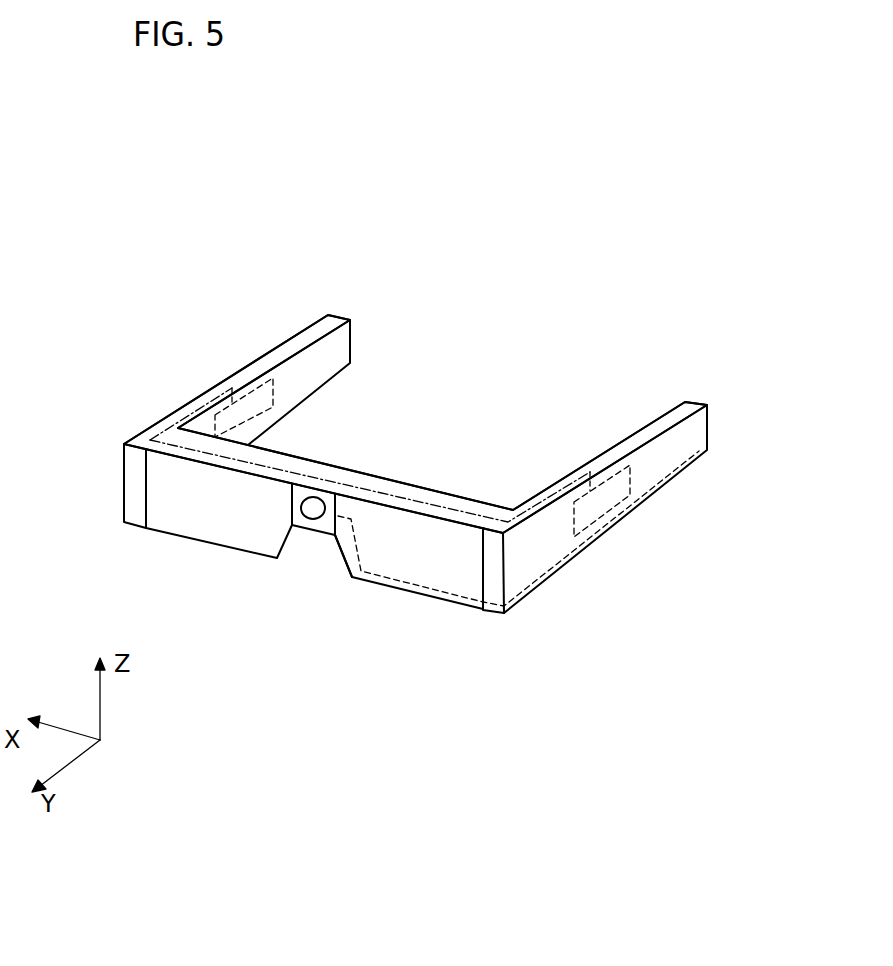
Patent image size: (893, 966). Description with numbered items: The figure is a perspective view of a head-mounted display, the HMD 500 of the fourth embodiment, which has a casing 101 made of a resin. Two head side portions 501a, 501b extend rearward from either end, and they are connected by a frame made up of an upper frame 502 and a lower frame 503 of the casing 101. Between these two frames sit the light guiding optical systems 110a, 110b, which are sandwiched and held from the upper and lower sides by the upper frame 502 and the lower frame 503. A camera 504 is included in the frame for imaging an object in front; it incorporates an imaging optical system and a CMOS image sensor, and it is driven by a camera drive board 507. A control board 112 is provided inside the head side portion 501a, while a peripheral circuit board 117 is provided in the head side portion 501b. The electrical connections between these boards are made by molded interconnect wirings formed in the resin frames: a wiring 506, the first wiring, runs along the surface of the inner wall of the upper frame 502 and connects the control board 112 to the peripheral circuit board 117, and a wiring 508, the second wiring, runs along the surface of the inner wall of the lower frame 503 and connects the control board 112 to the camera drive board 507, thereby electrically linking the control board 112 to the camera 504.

The HMD 500 is at (226, 167).
The casing 101 is at (140, 438).
The head side portion 501b is at (330, 386).
The head side portion 501a is at (673, 477).
The upper frame 502 is at (403, 483).
The light guiding optical system 110b is at (182, 527).
The light guiding optical system 110a is at (432, 562).
The camera 504 is at (292, 512).
The camera drive board 507 is at (320, 528).
The wiring 508 is at (345, 558).
The lower frame 503 is at (389, 588).
The wiring 506 is at (468, 514).
The peripheral circuit board 117 is at (285, 385).
The control board 112 is at (612, 508).